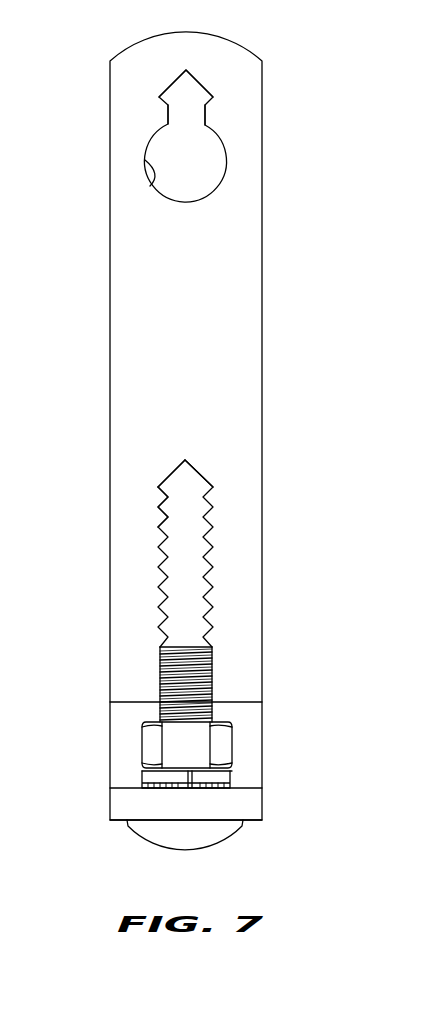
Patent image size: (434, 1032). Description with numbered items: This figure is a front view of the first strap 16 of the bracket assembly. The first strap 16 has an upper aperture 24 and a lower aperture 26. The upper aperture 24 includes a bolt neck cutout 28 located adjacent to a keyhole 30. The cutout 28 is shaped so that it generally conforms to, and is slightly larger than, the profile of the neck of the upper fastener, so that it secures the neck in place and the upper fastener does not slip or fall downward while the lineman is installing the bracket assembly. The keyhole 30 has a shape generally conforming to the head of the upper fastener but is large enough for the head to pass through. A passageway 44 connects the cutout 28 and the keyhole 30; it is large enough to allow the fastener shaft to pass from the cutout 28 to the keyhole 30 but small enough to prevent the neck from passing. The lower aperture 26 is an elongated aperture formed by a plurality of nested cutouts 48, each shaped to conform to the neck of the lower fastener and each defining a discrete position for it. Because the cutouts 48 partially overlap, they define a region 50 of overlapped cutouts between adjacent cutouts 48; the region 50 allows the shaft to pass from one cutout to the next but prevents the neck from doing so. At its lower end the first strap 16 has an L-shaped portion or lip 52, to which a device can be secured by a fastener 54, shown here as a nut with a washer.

The first strap 16 is at (118, 292).
The upper aperture 24 is at (228, 134).
The bolt neck cutout 28 is at (180, 92).
The keyhole 30 is at (145, 160).
The passageway 44 is at (180, 115).
The lower aperture 26 is at (212, 545).
The nested cutouts 48 is at (177, 465).
The region of overlapped cutouts 50 is at (188, 488).
The L-shaped portion or lip 52 is at (140, 805).
The fastener 54 is at (150, 745).